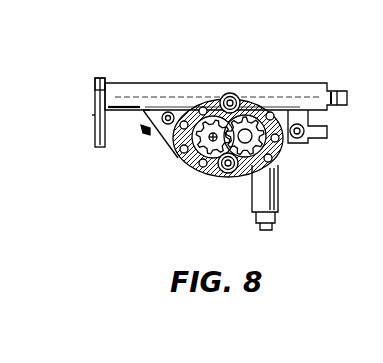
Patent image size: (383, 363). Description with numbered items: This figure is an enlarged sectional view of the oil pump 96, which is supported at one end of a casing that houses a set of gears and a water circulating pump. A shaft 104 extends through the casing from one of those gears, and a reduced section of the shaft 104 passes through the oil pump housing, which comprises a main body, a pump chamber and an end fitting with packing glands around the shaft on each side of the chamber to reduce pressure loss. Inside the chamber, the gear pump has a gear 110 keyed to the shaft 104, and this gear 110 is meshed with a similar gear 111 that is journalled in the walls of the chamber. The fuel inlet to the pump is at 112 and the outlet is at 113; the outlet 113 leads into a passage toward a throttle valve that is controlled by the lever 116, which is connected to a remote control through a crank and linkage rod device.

The pump 96 is at (166, 173).
The shaft 104 is at (210, 108).
The gear 110 is at (175, 150).
The gear 111 is at (288, 145).
The fuel inlet 112 is at (223, 173).
The outlet 113 is at (234, 94).
The lever 116 is at (95, 133).